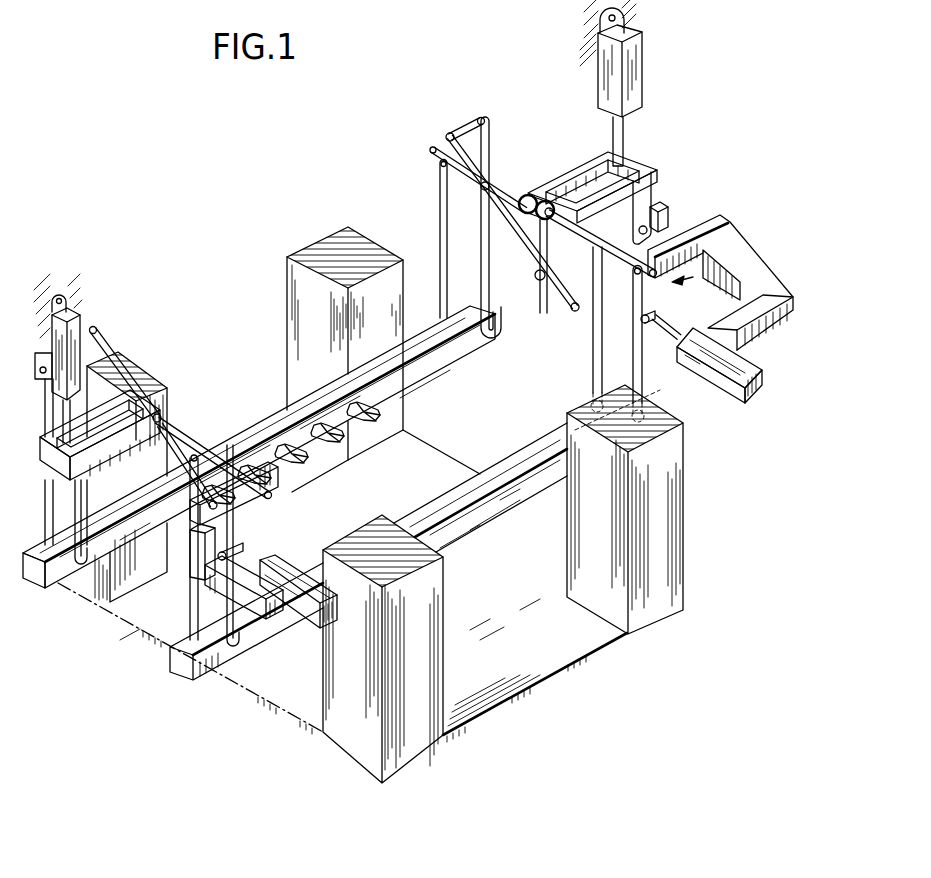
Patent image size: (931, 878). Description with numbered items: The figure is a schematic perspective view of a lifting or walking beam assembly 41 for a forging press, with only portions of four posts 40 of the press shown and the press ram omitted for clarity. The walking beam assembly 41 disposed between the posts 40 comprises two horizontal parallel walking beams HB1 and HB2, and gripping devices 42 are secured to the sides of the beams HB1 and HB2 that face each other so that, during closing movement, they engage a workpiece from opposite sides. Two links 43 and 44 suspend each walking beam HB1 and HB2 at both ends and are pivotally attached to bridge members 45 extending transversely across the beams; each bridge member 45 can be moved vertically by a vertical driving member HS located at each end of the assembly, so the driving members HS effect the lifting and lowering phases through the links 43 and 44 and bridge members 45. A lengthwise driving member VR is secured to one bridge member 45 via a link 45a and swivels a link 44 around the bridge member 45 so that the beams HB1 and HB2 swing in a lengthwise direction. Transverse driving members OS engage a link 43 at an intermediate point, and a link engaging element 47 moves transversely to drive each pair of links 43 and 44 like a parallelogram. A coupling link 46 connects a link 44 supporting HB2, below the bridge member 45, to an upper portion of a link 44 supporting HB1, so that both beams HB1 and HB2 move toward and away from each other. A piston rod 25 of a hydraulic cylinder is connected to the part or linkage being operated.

The posts 40 is at (399, 280).
The walking beam assembly 41 is at (728, 252).
The gripping devices 42 is at (338, 446).
The link 43 is at (440, 228).
The link 44 is at (482, 247).
The bridge member 45 is at (669, 229).
The link 45a is at (536, 210).
The coupling link 46 is at (520, 235).
The link engaging element 47 is at (656, 314).
The piston rod 25 is at (566, 298).
The vertical driving member HS is at (636, 78).
The lengthwise driving member VR is at (647, 185).
The transverse driving member OS is at (730, 390).
The walking beam HB1 is at (437, 357).
The walking beam HB2 is at (527, 455).